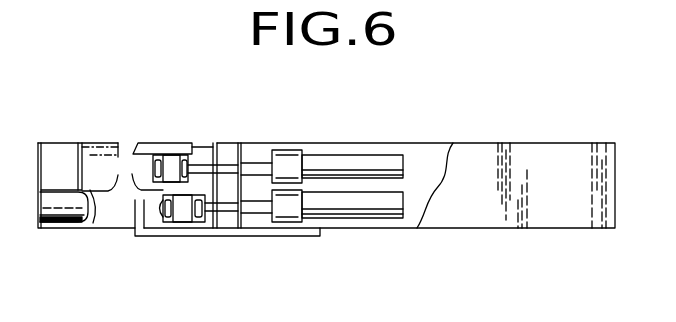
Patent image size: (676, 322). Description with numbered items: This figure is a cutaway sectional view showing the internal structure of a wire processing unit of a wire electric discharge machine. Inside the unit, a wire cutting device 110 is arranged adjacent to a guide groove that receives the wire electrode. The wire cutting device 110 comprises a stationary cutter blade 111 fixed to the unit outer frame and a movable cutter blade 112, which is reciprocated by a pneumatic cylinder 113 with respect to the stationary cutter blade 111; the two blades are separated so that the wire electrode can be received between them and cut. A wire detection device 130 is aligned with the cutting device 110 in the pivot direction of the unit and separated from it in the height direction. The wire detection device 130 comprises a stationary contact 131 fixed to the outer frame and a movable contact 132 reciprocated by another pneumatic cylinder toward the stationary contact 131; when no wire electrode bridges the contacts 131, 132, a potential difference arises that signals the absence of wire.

The wire cutting device 110 is at (157, 128).
The stationary cutter blade 111 is at (112, 140).
The movable cutter blade 112 is at (175, 142).
The pneumatic cylinder 113 is at (345, 158).
The wire detection device 130 is at (120, 200).
The stationary contact 131 is at (93, 223).
The movable contact 132 is at (129, 197).